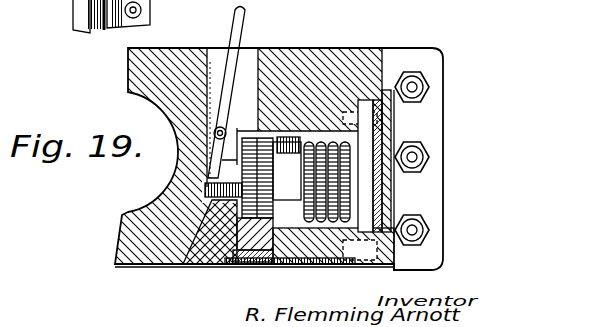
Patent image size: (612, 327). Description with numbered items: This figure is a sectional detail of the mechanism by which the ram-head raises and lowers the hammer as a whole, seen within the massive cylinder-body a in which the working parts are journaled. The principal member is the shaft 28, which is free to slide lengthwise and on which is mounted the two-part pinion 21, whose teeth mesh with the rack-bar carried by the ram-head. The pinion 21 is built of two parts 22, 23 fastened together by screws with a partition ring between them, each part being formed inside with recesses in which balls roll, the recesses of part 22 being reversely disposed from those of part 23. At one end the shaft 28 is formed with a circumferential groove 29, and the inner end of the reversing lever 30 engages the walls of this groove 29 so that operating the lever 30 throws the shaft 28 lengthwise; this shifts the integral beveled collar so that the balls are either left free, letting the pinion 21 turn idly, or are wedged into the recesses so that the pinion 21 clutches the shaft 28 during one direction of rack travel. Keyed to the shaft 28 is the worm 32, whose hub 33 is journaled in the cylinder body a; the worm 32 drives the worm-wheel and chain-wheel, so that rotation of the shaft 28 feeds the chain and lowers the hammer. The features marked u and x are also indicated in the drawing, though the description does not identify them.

The cylinder-body a is at (332, 63).
The reversing lever 30 is at (246, 21).
The shaft 28 is at (241, 125).
The circumferential groove 29 is at (172, 264).
The pinion part 22 is at (212, 203).
The pinion 21 is at (236, 264).
The pinion part 23 is at (304, 266).
The worm 32 is at (394, 182).
The hub 33 is at (412, 157).
The bracket u is at (98, 36).
The pin x is at (143, 12).